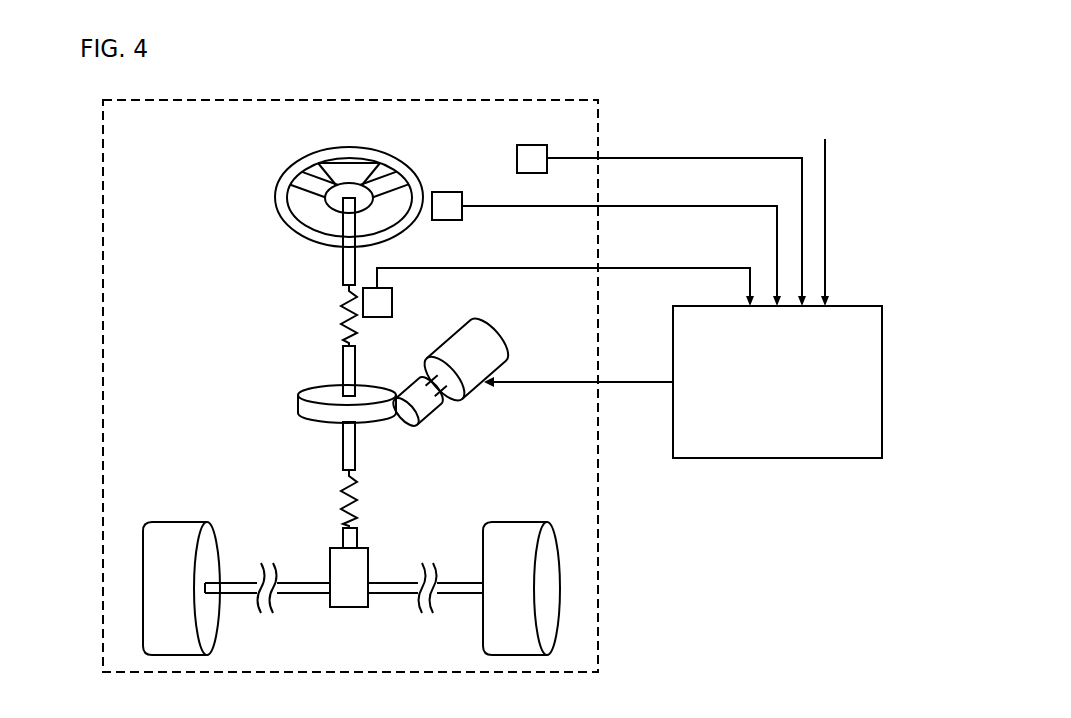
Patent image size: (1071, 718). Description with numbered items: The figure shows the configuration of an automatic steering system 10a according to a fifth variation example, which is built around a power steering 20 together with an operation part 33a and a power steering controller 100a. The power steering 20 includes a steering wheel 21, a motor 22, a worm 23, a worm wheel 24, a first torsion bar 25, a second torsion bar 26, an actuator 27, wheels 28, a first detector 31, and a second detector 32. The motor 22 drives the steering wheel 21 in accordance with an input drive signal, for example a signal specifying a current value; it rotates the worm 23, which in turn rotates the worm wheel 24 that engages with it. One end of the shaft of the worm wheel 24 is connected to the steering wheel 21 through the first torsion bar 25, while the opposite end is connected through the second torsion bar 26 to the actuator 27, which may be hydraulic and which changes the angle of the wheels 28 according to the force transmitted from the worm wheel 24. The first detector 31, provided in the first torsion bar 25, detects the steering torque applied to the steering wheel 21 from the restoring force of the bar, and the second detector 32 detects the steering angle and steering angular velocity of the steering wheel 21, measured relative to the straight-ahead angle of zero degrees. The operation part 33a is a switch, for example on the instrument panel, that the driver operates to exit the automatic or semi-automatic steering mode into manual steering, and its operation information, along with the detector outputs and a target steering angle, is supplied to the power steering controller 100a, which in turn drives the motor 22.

The automatic steering system 10a is at (690, 70).
The power steering 20 is at (175, 99).
The steering wheel 21 is at (411, 168).
The motor 22 is at (481, 321).
The worm 23 is at (430, 421).
The worm wheel 24 is at (306, 387).
The first torsion bar 25 is at (342, 309).
The second torsion bar 26 is at (342, 494).
The actuator 27 is at (330, 553).
The wheels 28 is at (170, 522).
The first detector 31 is at (377, 317).
The second detector 32 is at (447, 192).
The operation part 33a is at (530, 145).
The power steering controller 100a is at (777, 458).